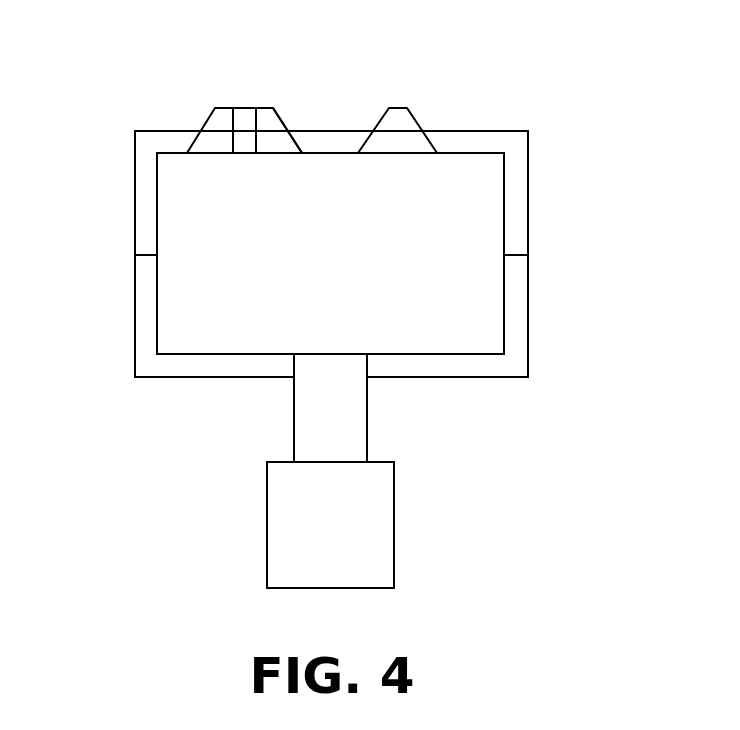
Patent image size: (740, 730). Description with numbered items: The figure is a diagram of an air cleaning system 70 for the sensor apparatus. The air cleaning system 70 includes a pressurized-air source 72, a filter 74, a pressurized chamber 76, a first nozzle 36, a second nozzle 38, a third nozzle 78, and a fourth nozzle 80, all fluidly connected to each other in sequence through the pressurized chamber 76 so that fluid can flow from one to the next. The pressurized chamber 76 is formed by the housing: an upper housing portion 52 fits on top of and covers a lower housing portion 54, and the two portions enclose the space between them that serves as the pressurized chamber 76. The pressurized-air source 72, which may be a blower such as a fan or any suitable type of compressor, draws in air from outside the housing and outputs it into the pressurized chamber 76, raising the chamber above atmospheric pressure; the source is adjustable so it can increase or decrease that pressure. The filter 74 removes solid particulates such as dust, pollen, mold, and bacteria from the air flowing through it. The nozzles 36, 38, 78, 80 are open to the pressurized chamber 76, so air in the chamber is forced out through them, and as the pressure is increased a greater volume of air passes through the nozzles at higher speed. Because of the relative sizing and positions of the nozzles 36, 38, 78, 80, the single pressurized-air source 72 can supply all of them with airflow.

The first nozzle 36 is at (225, 107).
The second nozzle 38 is at (240, 107).
The upper housing portion 52 is at (135, 193).
The lower housing portion 54 is at (135, 318).
The air cleaning system 70 is at (575, 167).
The pressurized-air source 72 is at (394, 523).
The filter 74 is at (367, 413).
The pressurized chamber 76 is at (478, 307).
The third nozzle 78 is at (263, 107).
The fourth nozzle 80 is at (391, 107).